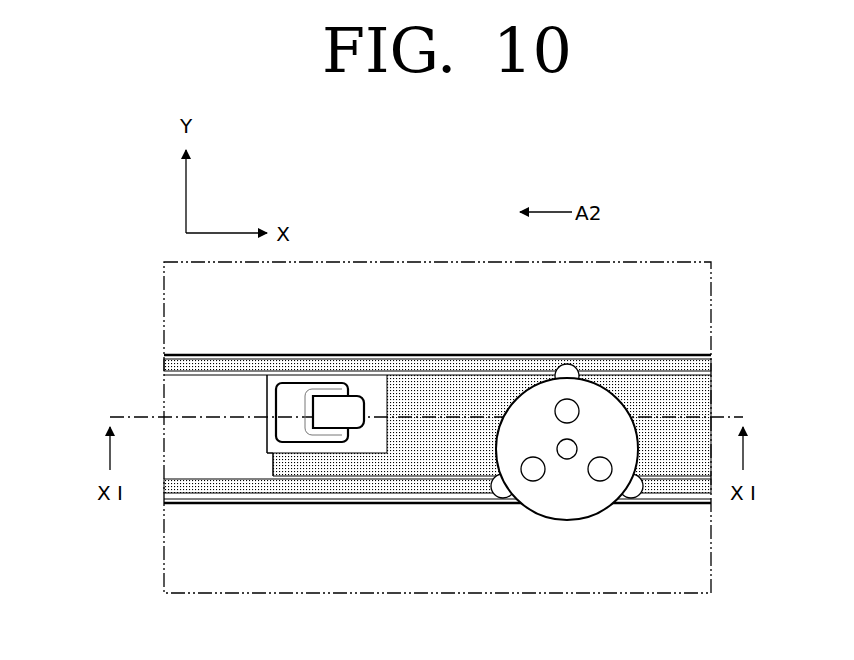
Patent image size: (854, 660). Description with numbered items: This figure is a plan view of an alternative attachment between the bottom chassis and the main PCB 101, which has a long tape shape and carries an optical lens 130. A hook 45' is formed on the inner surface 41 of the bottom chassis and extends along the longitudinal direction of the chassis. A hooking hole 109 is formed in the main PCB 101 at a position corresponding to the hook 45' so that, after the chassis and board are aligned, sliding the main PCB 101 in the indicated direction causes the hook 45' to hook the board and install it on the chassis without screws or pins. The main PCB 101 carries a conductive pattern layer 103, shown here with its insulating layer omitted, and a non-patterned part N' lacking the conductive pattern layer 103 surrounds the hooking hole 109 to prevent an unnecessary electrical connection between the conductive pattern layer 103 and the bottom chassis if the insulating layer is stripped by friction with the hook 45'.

The main PCB 101 is at (150, 388).
The conductive pattern layer 103 is at (711, 364).
The hooking hole 109 is at (287, 384).
The hook 45' is at (350, 367).
The non-patterned part N' is at (328, 508).
The optical lens 130 is at (572, 519).
The inner surface 41 is at (178, 545).